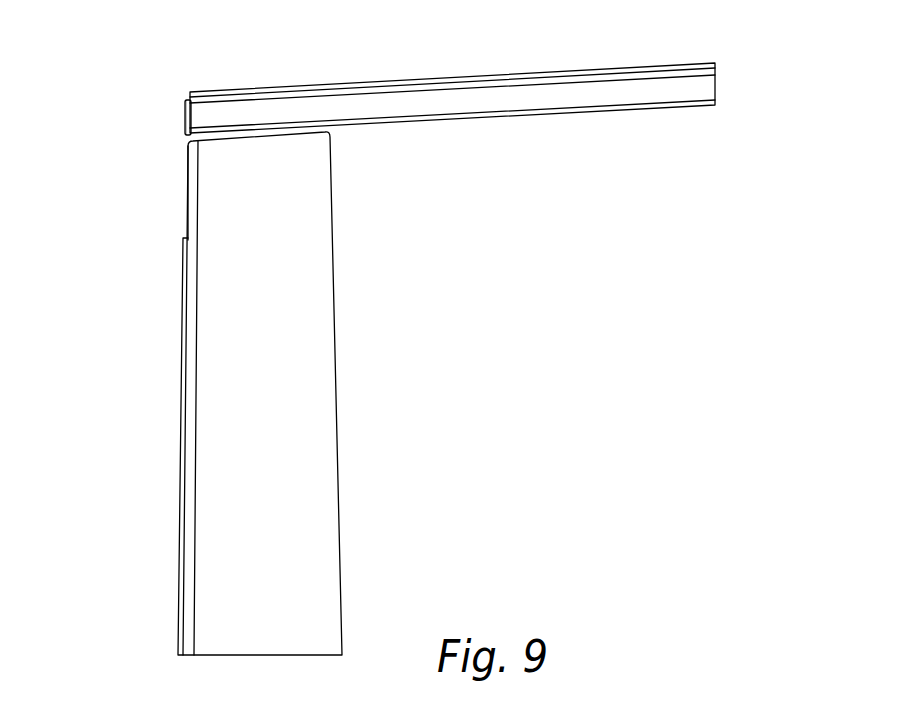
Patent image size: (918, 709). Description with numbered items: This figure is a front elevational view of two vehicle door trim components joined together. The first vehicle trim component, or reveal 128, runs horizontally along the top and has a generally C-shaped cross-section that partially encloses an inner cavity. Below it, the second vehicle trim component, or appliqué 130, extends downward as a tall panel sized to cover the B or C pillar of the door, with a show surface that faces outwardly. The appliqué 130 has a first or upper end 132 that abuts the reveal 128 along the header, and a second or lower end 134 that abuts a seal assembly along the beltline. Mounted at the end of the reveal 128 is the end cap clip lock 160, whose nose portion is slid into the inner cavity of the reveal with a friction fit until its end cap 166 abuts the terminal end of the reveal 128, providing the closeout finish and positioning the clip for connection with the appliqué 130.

The reveal 128 is at (520, 97).
The end cap 166 is at (185, 118).
The end cap clip lock 160 is at (150, 127).
The upper end 132 is at (187, 160).
The appliqué 130 is at (203, 455).
The lower end 134 is at (225, 630).